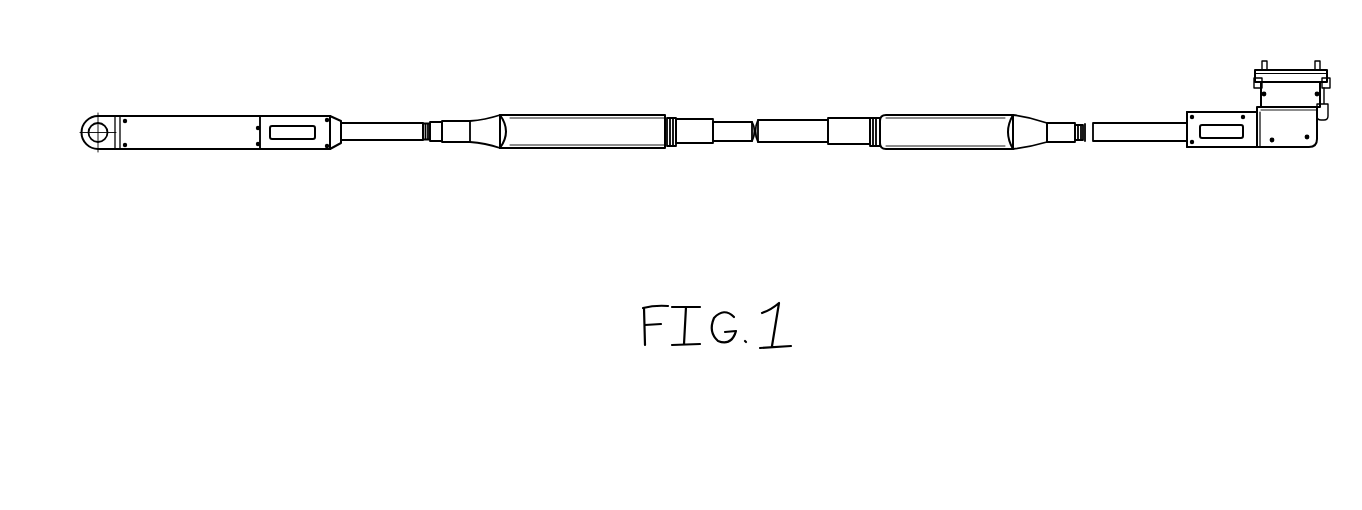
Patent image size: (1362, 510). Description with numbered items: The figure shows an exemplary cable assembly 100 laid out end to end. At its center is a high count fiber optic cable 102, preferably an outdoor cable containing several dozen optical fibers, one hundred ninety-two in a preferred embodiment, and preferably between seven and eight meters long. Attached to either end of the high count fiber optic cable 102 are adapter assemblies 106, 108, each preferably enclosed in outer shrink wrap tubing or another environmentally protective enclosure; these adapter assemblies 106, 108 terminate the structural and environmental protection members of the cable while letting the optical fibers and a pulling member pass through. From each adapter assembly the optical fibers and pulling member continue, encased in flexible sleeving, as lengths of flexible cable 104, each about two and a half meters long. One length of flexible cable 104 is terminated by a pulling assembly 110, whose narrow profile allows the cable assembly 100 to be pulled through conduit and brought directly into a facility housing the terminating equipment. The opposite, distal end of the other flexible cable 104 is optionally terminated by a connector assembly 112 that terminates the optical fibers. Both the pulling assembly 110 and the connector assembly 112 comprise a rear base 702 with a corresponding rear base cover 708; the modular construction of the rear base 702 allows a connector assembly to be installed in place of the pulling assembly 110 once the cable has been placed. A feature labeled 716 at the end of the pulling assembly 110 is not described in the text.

The cable assembly 100 is at (701, 140).
The high count fiber optic cable 102 is at (773, 106).
The flexible cable 104 is at (764, 105).
The adapter assembly 106 is at (582, 156).
The adapter assembly 108 is at (946, 159).
The pulling assembly 110 is at (194, 178).
The connector assembly 112 is at (1271, 140).
The rear base 702 is at (758, 124).
The rear base cover 708 is at (756, 140).
The ring eyelet 716 is at (82, 172).